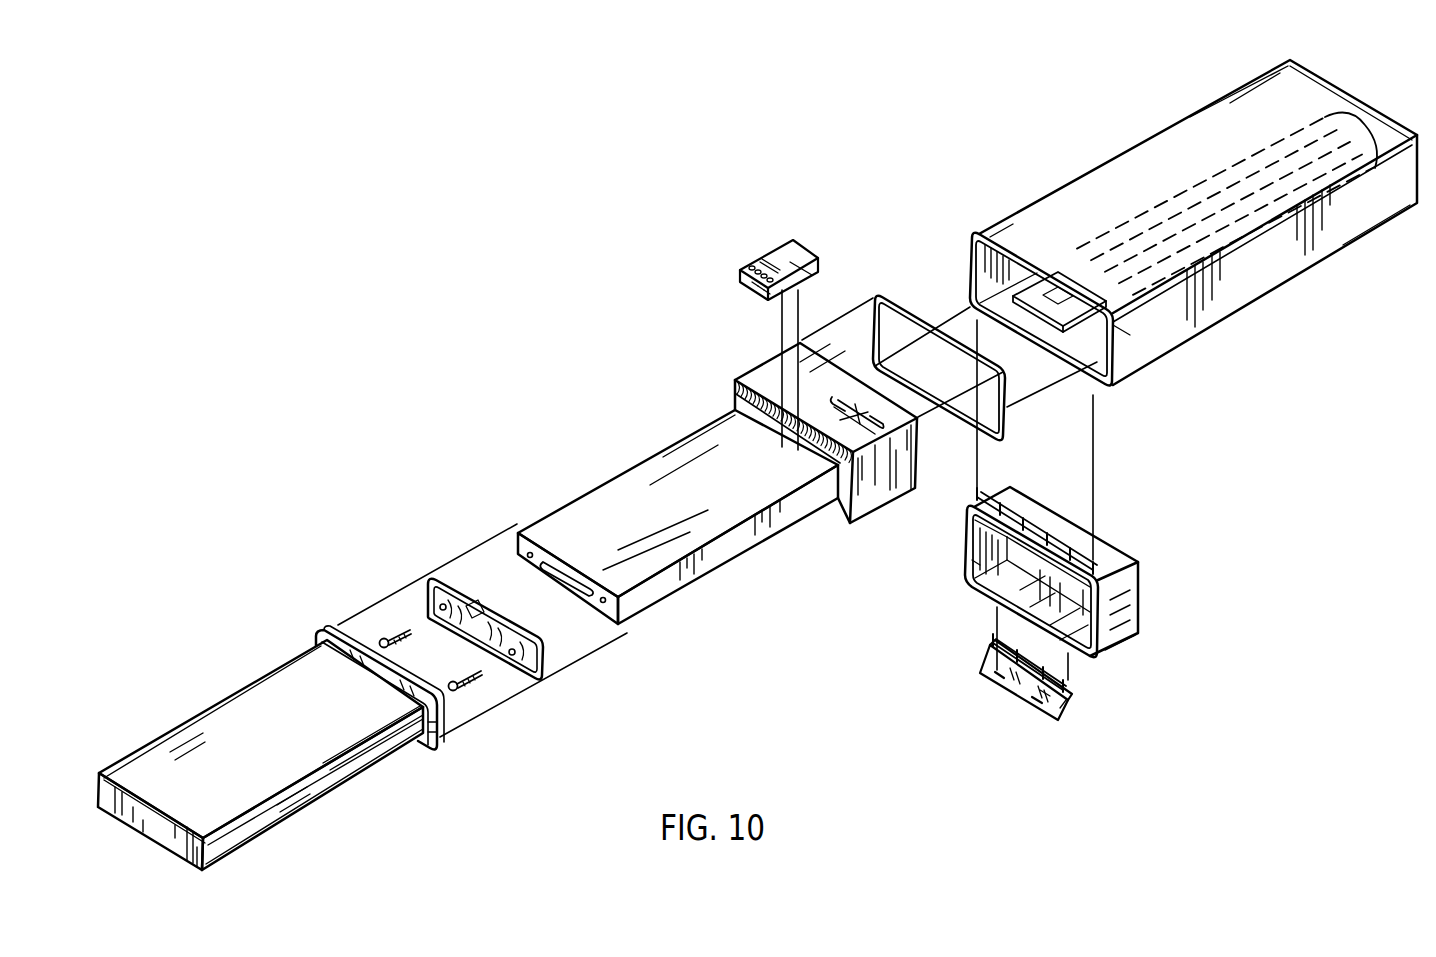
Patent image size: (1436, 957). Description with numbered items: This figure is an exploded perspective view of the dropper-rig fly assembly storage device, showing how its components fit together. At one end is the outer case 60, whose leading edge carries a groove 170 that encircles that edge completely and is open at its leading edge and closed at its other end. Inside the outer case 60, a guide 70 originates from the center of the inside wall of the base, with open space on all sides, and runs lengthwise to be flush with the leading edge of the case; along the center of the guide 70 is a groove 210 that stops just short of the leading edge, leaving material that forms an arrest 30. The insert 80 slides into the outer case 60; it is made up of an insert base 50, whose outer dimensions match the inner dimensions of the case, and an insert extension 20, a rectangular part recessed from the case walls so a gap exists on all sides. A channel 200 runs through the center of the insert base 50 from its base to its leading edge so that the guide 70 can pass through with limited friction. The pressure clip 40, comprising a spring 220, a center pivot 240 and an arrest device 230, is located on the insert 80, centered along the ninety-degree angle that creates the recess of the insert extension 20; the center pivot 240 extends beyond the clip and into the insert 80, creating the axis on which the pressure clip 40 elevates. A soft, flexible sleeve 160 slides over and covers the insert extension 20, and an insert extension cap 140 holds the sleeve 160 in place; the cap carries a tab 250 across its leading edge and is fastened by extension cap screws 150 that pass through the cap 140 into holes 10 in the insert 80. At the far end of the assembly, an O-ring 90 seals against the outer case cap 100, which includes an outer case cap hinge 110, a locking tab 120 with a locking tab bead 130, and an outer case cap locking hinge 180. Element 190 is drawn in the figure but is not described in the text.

The holes 10 is at (440, 605).
The insert extension 20 is at (615, 523).
The arrest 30 is at (1045, 308).
The pressure clip 40 is at (790, 258).
The insert base 50 is at (765, 373).
The outer case 60 is at (1205, 153).
The guide 70 is at (1322, 128).
The insert 80 is at (747, 398).
The O-ring 90 is at (1006, 407).
The outer case cap 100 is at (1023, 510).
The outer case cap hinge 110 is at (1063, 542).
The locking tab 120 is at (1052, 715).
The locking tab bead 130 is at (1037, 705).
The insert extension cap 140 is at (500, 657).
The extension cap screws 150 is at (391, 645).
The sleeve 160 is at (273, 712).
The groove 170 is at (1113, 338).
The outer case cap locking hinge 180 is at (1050, 685).
The opening 190 is at (968, 530).
The channel 200 is at (578, 588).
The groove 210 is at (1192, 217).
The spring 220 is at (760, 290).
The arrest device 230 is at (815, 277).
The center pivot 240 is at (770, 260).
The tab 250 is at (445, 648).